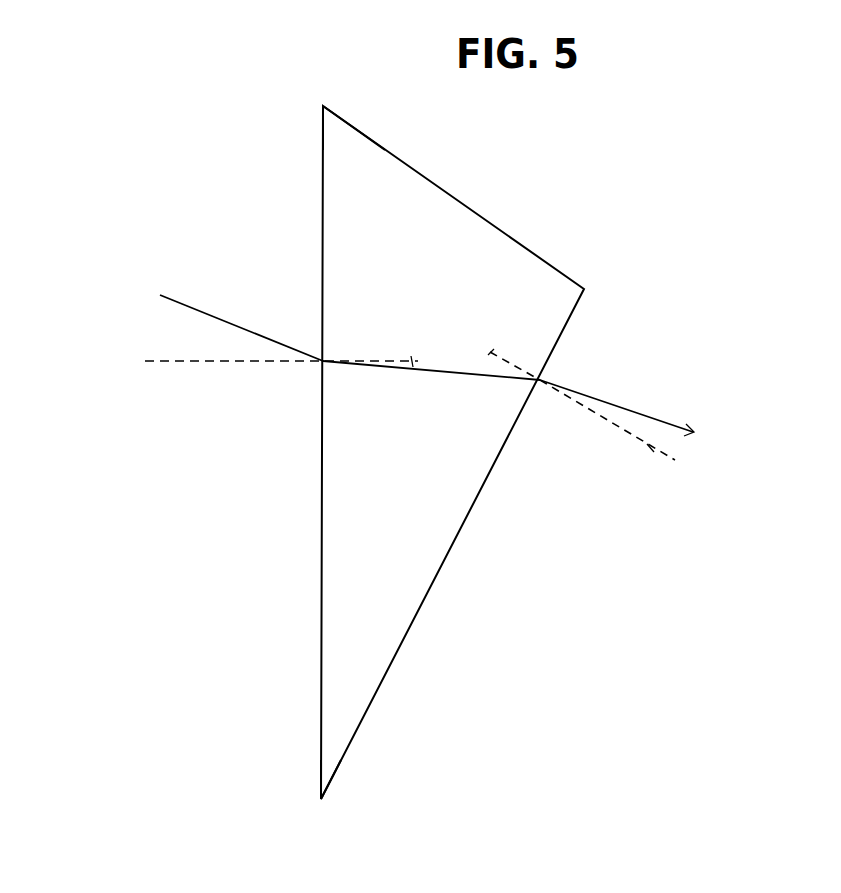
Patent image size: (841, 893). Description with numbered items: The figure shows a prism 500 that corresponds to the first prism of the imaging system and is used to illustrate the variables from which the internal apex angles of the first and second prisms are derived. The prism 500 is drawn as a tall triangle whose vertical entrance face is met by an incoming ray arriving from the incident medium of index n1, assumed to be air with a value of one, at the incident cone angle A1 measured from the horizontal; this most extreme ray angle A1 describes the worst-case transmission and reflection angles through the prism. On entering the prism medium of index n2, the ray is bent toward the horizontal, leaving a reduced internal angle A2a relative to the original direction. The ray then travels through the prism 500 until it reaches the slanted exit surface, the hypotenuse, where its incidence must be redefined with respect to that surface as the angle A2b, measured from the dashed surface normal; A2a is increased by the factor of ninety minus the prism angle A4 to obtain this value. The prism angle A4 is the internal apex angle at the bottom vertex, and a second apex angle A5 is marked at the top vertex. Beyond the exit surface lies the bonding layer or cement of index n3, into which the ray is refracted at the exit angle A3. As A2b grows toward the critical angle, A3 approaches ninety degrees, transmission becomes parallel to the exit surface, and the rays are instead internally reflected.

The prism 500 is at (688, 131).
The incident cone angle A1 is at (162, 300).
The internal ray angle after entrance refraction A2a is at (404, 346).
The internal angle with respect to the prism hypotenuse A2b is at (485, 397).
The exit transmission angle A3 is at (653, 402).
The prism angle A4 is at (335, 755).
The prism apex angle A5 is at (354, 133).
The incident medium index n1 is at (264, 183).
The prism index n2 is at (395, 223).
The bonding layer or cement index n3 is at (610, 325).